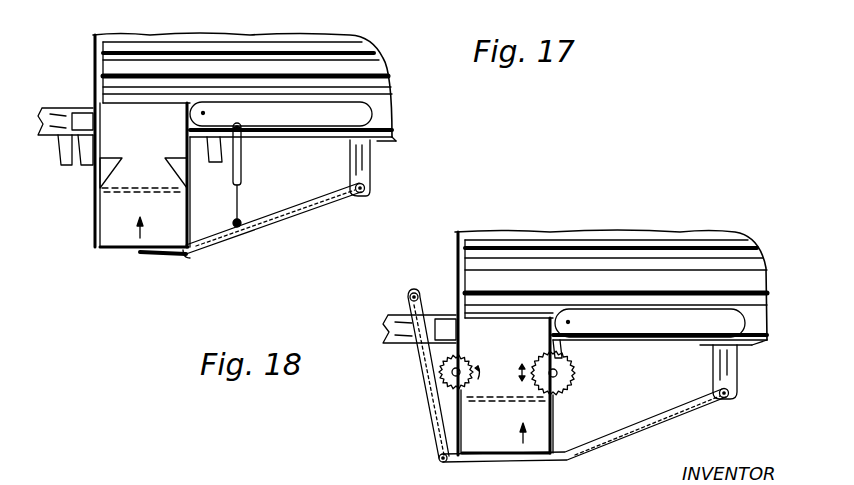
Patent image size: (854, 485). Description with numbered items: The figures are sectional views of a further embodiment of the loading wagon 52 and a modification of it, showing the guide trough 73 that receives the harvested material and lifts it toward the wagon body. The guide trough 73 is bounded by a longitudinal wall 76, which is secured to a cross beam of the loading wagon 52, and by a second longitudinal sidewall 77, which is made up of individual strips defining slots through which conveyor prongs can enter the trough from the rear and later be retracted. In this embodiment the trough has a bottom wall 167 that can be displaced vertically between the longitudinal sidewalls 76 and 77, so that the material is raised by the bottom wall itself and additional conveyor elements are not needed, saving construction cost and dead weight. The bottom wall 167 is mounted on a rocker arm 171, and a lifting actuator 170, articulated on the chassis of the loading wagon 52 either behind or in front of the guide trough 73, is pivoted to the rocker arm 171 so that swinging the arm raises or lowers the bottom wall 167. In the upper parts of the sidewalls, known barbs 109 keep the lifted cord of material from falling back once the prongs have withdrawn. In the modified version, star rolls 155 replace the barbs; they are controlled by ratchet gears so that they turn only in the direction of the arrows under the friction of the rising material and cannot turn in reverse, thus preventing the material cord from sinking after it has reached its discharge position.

In FIG. 17, the loading wagon 52 is at (217, 140).
In FIG. 18, the loading wagon 52 is at (575, 342).
In FIG. 17, the guide trough 73 is at (87, 234).
In FIG. 18, the guide trough 73 is at (457, 422).
In FIG. 17, the longitudinal wall 76 is at (95, 211).
In FIG. 17, the second longitudinal sidewall 77 is at (188, 216).
In FIG. 17, the barbs 109 is at (172, 161).
In FIG. 18, the star rolls 155 is at (547, 360).
In FIG. 17, the bottom wall 167 is at (127, 250).
In FIG. 18, the bottom wall 167 is at (498, 452).
In FIG. 17, the lifting actuator 170 is at (243, 159).
In FIG. 18, the lifting actuator 170 is at (418, 362).
In FIG. 17, the rocker arm 171 is at (298, 214).
In FIG. 18, the rocker arm 171 is at (652, 427).